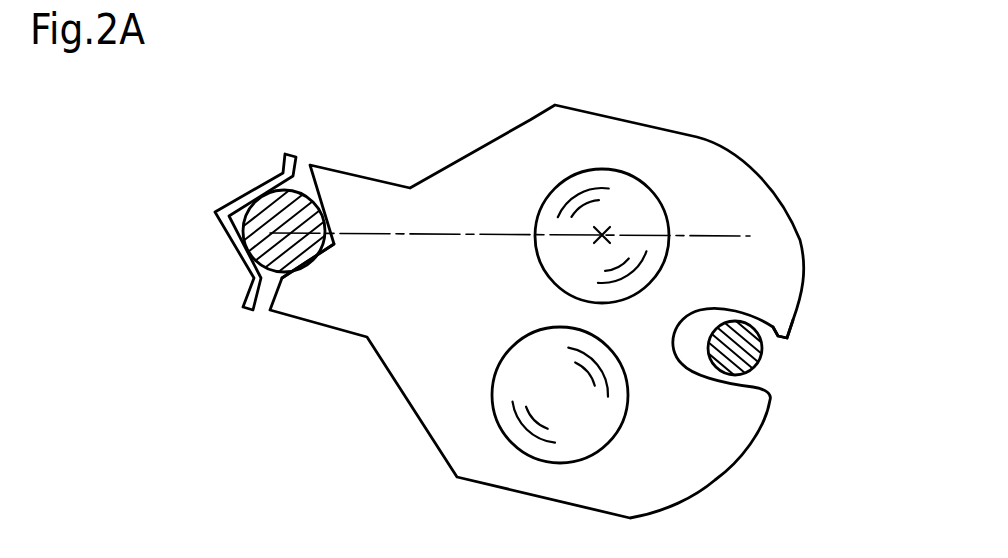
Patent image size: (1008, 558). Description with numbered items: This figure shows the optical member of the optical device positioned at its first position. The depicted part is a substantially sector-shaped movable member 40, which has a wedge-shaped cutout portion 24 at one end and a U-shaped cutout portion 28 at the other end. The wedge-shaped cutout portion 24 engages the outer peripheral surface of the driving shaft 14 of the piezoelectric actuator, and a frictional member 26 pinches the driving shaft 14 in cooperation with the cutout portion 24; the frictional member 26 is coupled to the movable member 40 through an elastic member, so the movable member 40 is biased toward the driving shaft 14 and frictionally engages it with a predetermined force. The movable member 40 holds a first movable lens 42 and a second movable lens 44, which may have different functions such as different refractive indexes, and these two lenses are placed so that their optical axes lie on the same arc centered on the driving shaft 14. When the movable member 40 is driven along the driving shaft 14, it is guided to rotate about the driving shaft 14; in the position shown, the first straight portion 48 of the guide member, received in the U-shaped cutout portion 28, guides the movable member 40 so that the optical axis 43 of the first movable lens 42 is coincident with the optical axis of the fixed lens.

The driving shaft 14 is at (277, 217).
The wedge-shaped cutout portion 24 is at (321, 228).
The frictional member 26 is at (216, 208).
The U-shaped cutout portion 28 is at (787, 338).
The movable member 40 is at (697, 135).
The first movable lens 42 is at (647, 213).
The optical axis 43 is at (603, 232).
The second movable lens 44 is at (593, 427).
The first straight portion 48 is at (762, 362).